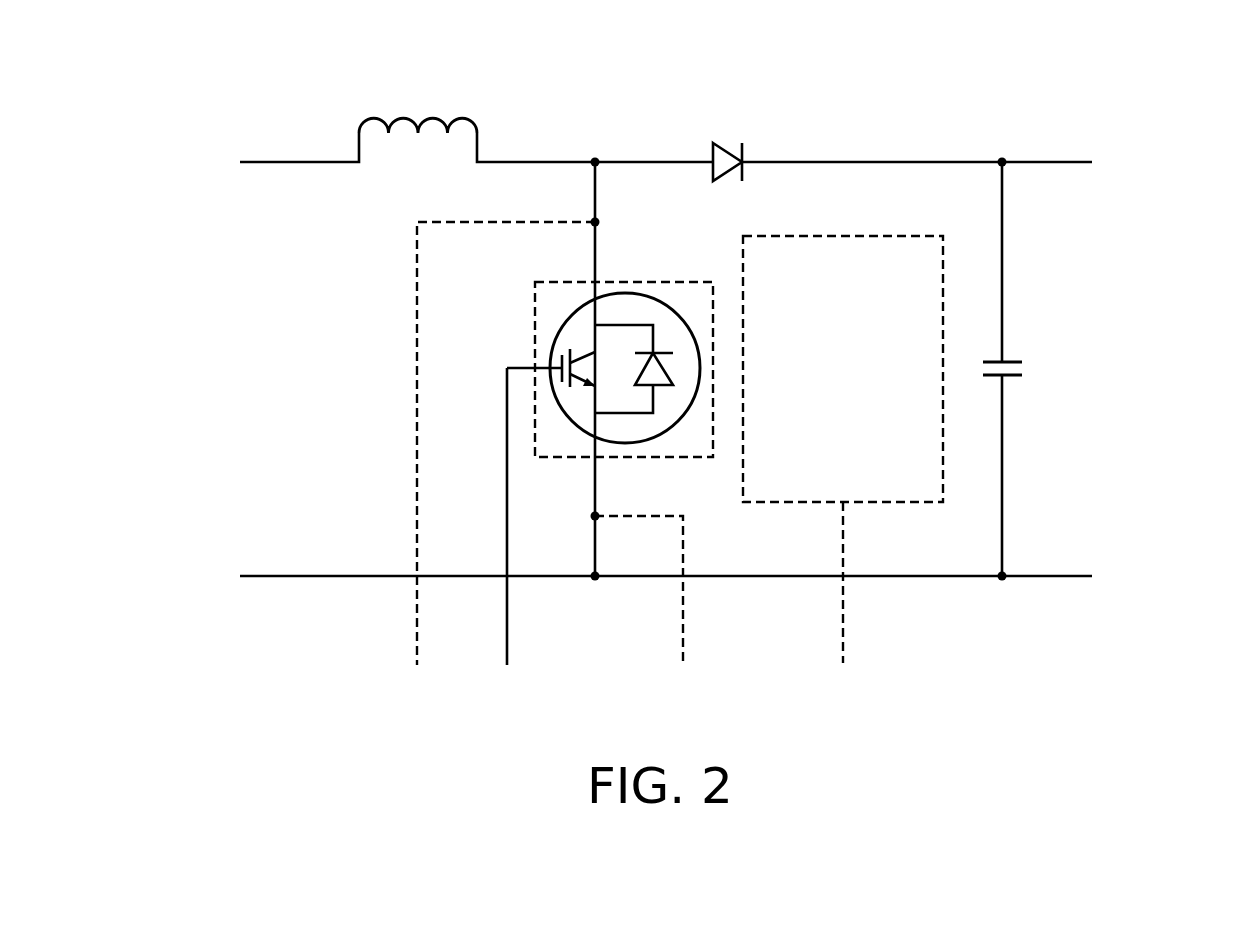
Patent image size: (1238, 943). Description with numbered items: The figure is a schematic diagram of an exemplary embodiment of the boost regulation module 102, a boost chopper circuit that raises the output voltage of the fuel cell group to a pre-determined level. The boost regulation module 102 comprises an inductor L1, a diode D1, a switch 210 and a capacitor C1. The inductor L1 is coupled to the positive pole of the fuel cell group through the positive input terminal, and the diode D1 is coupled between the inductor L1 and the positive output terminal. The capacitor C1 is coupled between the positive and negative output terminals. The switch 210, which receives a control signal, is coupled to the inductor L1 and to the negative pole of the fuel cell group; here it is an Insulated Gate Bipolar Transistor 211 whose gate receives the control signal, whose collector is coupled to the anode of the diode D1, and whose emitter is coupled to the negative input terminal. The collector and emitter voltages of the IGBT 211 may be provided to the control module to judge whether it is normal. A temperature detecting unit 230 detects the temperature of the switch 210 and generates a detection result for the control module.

The boost regulation module 102 is at (1060, 72).
The switch 210 is at (535, 322).
The Insulated Gate Bipolar Transistor (IGBT) 211 is at (657, 295).
The temperature detecting unit 230 is at (820, 445).
The inductor L1 is at (418, 118).
The diode D1 is at (731, 150).
The capacitor C1 is at (1025, 368).